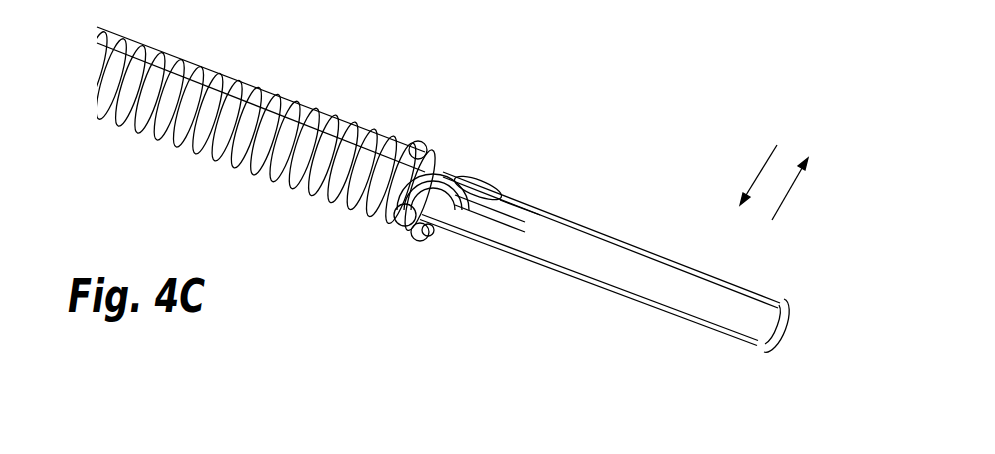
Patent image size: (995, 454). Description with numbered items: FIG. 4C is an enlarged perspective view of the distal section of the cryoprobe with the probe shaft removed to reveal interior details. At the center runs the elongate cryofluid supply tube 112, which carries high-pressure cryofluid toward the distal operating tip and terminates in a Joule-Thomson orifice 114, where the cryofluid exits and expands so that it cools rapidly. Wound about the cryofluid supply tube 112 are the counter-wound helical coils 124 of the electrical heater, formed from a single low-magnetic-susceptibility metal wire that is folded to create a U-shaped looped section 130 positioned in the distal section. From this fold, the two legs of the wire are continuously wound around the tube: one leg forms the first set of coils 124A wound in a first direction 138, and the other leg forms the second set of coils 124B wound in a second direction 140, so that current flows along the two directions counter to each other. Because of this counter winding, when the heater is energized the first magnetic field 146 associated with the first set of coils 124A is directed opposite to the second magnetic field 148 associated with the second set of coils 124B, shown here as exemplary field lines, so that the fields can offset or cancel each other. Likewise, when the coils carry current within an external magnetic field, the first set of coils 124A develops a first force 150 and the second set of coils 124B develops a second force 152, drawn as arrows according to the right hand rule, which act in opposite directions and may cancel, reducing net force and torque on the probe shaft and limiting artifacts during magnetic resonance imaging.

The cryofluid supply tube 112 is at (639, 246).
The Joule-Thomson orifice 114 is at (763, 350).
The counter-wound helical coils 124 is at (357, 78).
The first set of coils 124A is at (400, 170).
The second set of coils 124B is at (430, 152).
The U-shaped looped section 130 is at (512, 168).
The first direction 138 is at (512, 208).
The second direction 140 is at (432, 233).
The first magnetic field 146 is at (397, 220).
The second magnetic field 148 is at (410, 148).
The first force 150 is at (770, 157).
The second force 152 is at (782, 203).